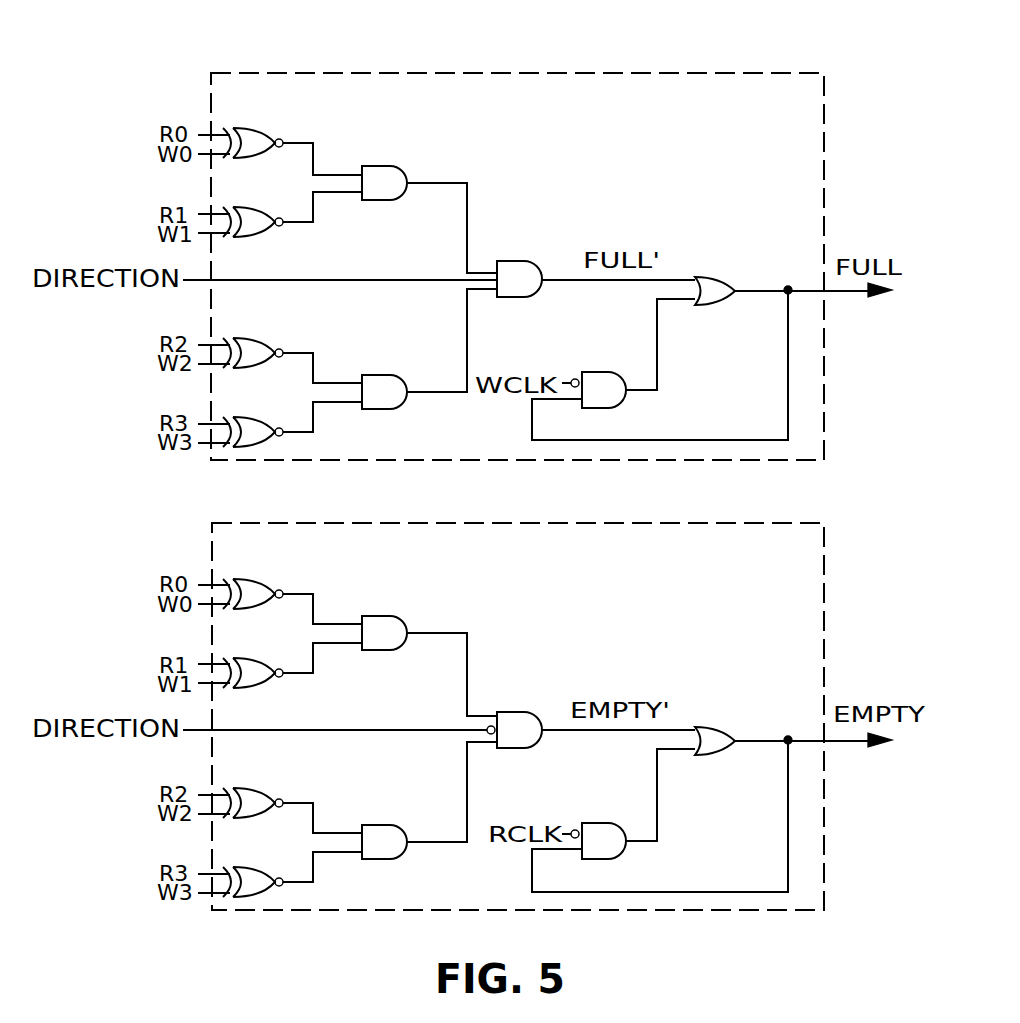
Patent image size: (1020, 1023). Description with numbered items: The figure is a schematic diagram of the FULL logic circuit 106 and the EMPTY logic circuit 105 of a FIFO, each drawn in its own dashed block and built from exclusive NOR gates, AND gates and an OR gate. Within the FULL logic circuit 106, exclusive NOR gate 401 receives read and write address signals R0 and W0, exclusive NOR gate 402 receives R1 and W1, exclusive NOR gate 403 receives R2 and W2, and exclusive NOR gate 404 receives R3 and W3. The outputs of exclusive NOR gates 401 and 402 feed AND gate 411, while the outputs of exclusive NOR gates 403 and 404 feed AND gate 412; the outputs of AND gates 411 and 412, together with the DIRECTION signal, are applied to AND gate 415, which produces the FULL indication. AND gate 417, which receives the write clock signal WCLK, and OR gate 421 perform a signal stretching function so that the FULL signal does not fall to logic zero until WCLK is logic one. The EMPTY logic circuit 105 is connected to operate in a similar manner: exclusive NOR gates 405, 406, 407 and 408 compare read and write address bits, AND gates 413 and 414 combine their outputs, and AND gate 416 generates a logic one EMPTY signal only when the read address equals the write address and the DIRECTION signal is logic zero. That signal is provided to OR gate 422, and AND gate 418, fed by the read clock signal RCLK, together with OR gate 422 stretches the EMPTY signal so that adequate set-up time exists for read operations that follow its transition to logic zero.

The EMPTY logic circuit 105 is at (514, 522).
The FULL logic circuit 106 is at (513, 72).
The exclusive NOR gate 401 is at (250, 126).
The exclusive NOR gate 402 is at (263, 235).
The exclusive NOR gate 403 is at (250, 336).
The exclusive NOR gate 404 is at (250, 416).
The exclusive NOR gate 405 is at (250, 577).
The exclusive NOR gate 406 is at (263, 686).
The exclusive NOR gate 407 is at (250, 786).
The exclusive NOR gate 408 is at (250, 866).
The AND gate 411 is at (378, 201).
The AND gate 412 is at (388, 373).
The AND gate 413 is at (378, 651).
The AND gate 414 is at (388, 823).
The AND gate 415 is at (518, 260).
The AND gate 416 is at (528, 710).
The AND gate 417 is at (627, 403).
The AND gate 418 is at (627, 853).
The OR gate 421 is at (718, 276).
The OR gate 422 is at (716, 726).